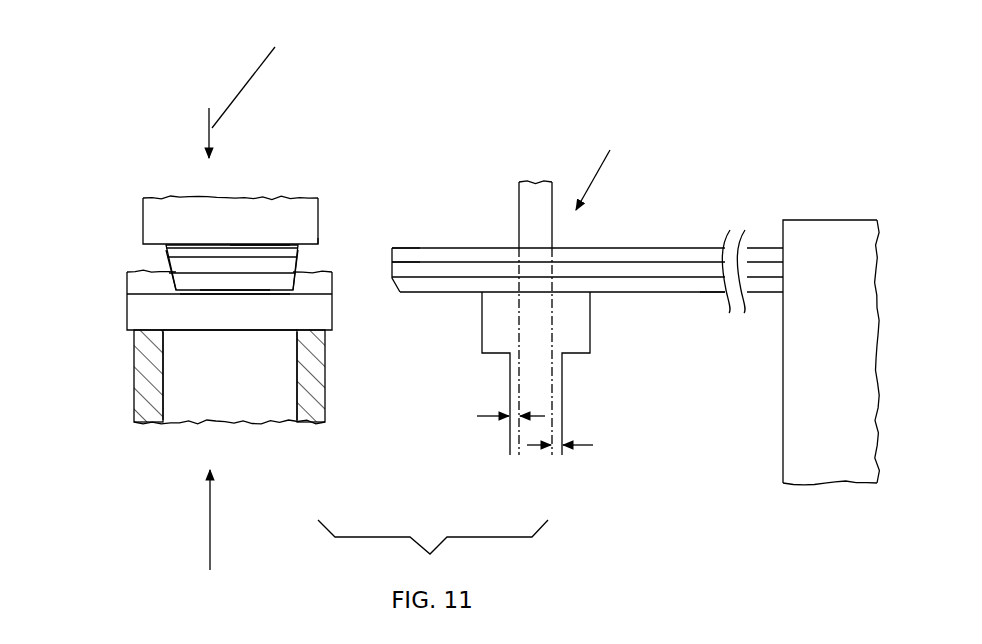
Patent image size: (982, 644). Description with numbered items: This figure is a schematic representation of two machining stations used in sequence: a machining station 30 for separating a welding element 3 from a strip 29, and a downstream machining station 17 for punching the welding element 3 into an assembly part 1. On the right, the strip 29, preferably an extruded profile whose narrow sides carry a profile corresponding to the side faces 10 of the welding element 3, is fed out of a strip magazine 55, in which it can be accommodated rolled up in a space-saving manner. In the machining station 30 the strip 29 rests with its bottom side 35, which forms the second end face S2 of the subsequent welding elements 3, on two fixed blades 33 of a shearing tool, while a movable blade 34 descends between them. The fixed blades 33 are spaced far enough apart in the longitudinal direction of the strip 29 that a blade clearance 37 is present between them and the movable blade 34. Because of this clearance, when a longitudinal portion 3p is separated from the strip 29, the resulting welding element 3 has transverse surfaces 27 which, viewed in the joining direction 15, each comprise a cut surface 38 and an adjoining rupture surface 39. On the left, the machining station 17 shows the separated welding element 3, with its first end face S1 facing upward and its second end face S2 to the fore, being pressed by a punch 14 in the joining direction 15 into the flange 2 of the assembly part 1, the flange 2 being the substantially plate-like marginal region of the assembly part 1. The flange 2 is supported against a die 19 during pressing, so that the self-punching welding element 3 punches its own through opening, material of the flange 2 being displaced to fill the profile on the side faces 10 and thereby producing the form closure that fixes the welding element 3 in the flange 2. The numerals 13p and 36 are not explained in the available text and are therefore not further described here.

The assembly part 1 is at (134, 311).
The flange 2 is at (318, 315).
The welding element 3 is at (206, 262).
The longitudinal portion 3p is at (408, 268).
The side faces 10 is at (265, 263).
The joining layer (alternative) 13p is at (420, 270).
The punch 14 is at (238, 222).
The joining direction 15 is at (253, 88).
The machining station 17 is at (225, 603).
The die 19 is at (140, 393).
The transverse surfaces 27 is at (165, 253).
The strip 29 is at (687, 264).
The machining station 30 is at (617, 150).
The fixed blades 33 is at (498, 337).
The movable blade 34 is at (527, 196).
The bottom side 35 is at (688, 293).
The top layer 36 is at (452, 250).
The blade clearance 37 is at (492, 416).
The cut surface 38 is at (298, 255).
The rupture surface 39 is at (168, 289).
The strip magazine 55 is at (802, 405).
The first end face S1 is at (261, 244).
The second end face S2 is at (238, 288).